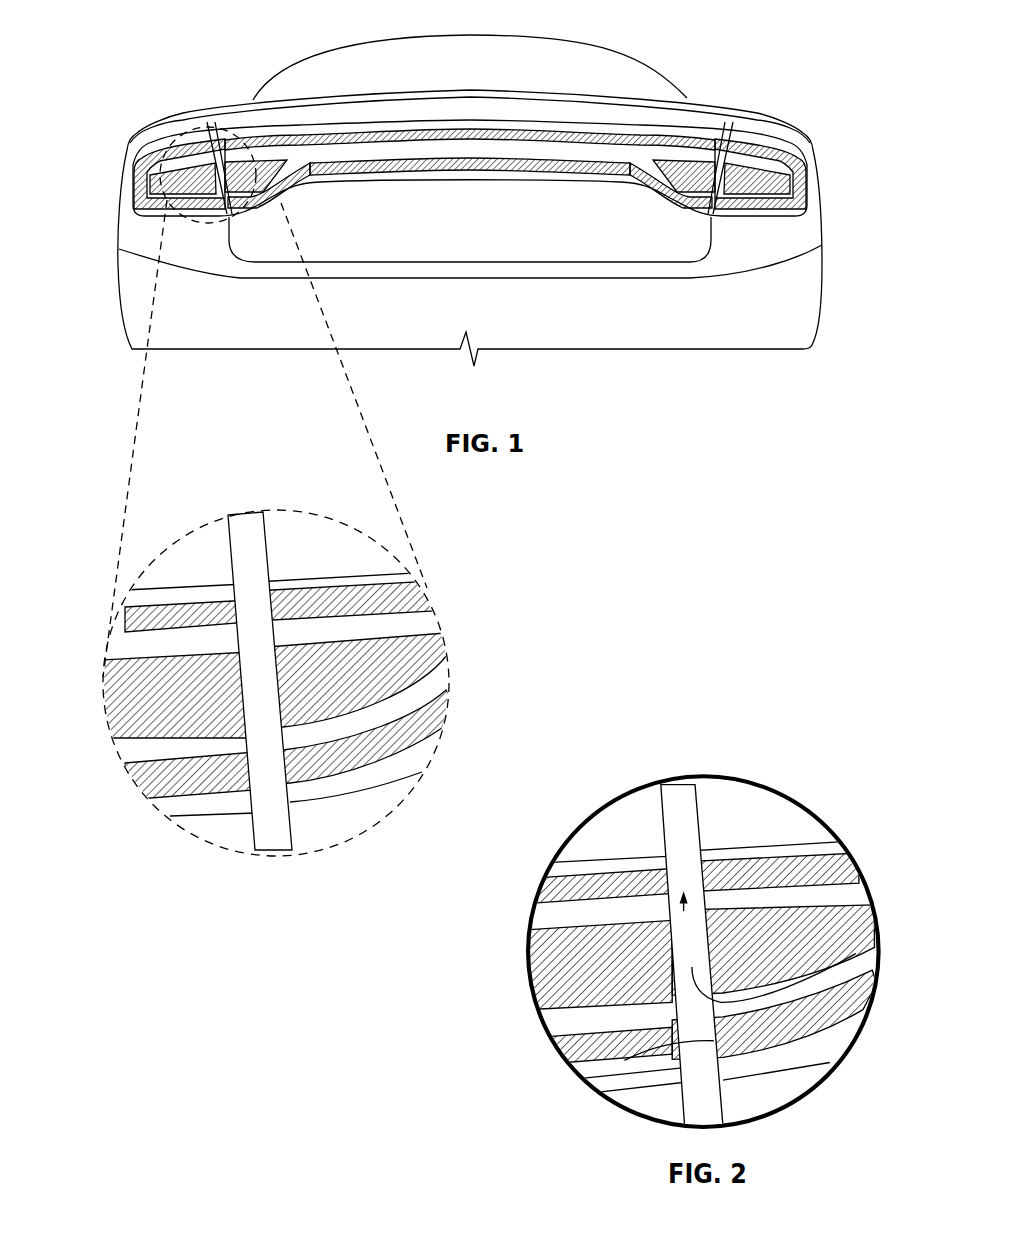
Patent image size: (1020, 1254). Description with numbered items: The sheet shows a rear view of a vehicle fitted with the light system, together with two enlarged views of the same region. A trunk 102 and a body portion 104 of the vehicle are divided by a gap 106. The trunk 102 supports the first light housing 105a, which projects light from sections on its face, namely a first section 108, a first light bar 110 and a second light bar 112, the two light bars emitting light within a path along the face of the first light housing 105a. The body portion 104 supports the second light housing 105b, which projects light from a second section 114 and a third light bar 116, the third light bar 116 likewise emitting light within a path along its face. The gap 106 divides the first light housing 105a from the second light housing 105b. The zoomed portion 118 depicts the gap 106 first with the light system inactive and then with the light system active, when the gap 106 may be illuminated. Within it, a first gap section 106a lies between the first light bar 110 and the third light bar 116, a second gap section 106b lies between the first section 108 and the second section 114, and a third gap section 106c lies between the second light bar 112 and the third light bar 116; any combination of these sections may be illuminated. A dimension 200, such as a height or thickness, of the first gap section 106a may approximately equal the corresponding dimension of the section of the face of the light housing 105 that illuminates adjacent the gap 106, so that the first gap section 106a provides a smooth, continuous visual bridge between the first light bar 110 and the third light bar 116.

In FIG. 1, the trunk 102 is at (483, 233).
In FIG. 1, the body portion 104 is at (128, 233).
In FIG. 1, the light housing 105 is at (470, 260).
In FIG. 1, the first light housing 105a is at (302, 195).
In FIG. 1, the second light housing 105b is at (171, 223).
In FIG. 1, the gap 106 is at (194, 120).
In FIG. 2, the gap 106 is at (662, 791).
In FIG. 2, the first gap section 106a is at (669, 880).
In FIG. 2, the second gap section 106b is at (842, 946).
In FIG. 2, the third gap section 106c is at (619, 1049).
In FIG. 1, the first section 108 is at (241, 172).
In FIG. 2, the first section 108 is at (855, 909).
In FIG. 1, the first light bar 110 is at (290, 140).
In FIG. 2, the first light bar 110 is at (840, 866).
In FIG. 1, the second light bar 112 is at (628, 173).
In FIG. 2, the second light bar 112 is at (850, 977).
In FIG. 1, the second section 114 is at (165, 185).
In FIG. 2, the second section 114 is at (547, 965).
In FIG. 1, the third light bar 116 is at (147, 187).
In FIG. 2, the third light bar 116 is at (545, 887).
In FIG. 1, the zoomed portion 118 is at (210, 468).
In FIG. 2, the dimension 200 is at (675, 847).